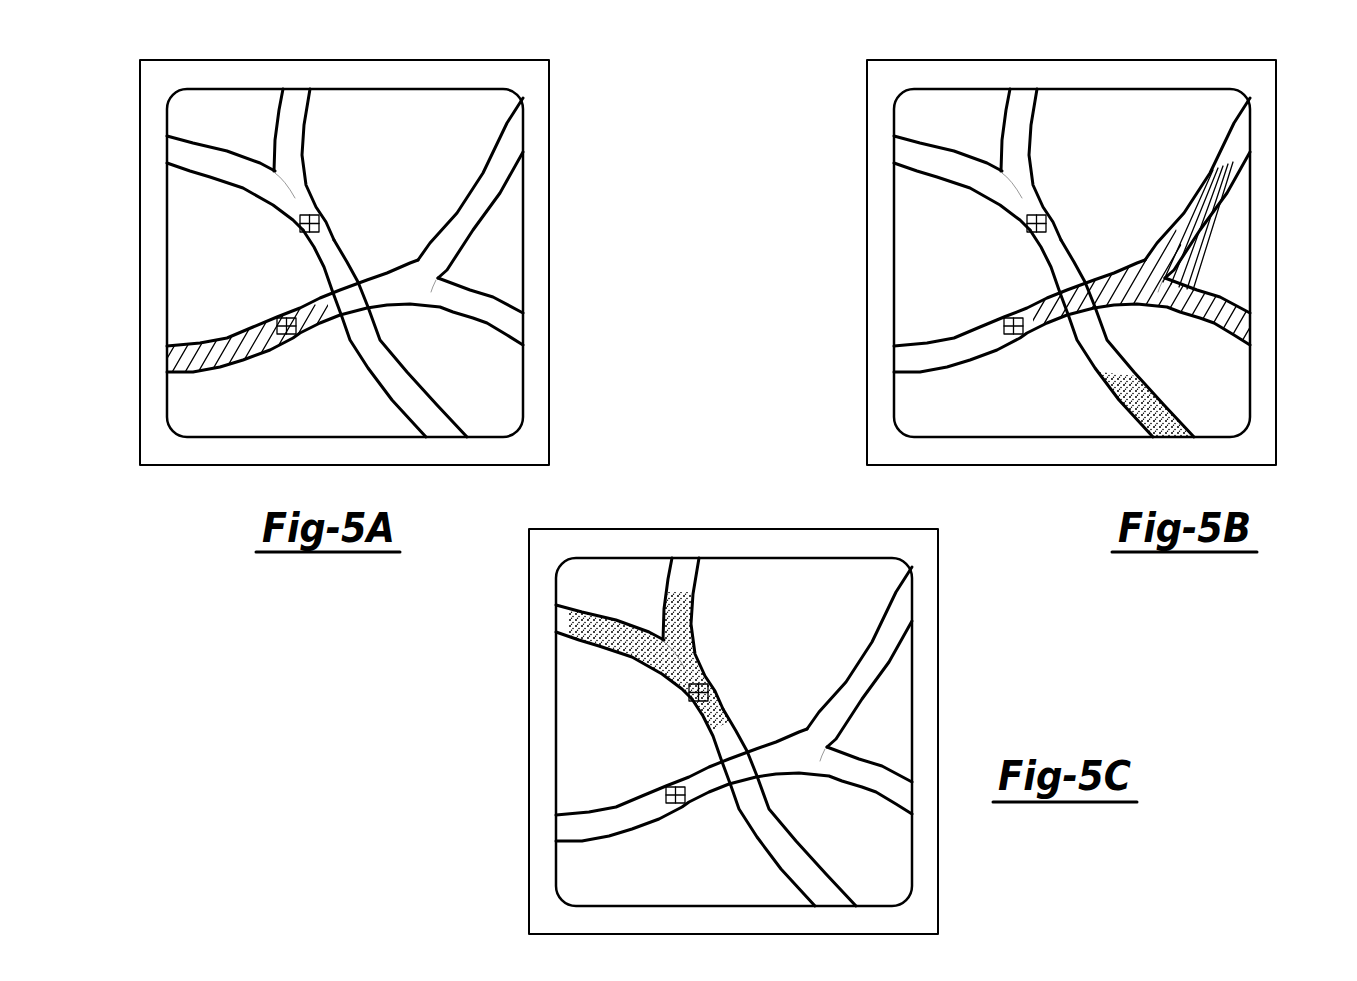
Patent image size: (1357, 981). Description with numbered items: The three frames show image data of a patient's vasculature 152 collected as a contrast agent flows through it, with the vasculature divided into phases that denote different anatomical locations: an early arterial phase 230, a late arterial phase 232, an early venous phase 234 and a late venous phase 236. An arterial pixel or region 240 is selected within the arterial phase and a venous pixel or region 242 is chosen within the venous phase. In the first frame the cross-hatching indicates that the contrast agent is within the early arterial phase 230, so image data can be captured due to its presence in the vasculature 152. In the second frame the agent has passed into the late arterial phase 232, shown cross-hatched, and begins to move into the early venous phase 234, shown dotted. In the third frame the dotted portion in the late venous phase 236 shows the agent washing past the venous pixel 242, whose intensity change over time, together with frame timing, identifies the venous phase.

In FIG. 5A, the vasculature 152 is at (231, 128).
In FIG. 5B, the vasculature 152 is at (1071, 241).
In FIG. 5C, the vasculature 152 is at (733, 710).
In FIG. 5A, the early arterial phase 230 is at (197, 348).
In FIG. 5B, the early arterial phase 230 is at (1084, 313).
In FIG. 5C, the early arterial phase 230 is at (697, 785).
In FIG. 5A, the late arterial phase 232 is at (493, 294).
In FIG. 5B, the late arterial phase 232 is at (1245, 196).
In FIG. 5C, the late arterial phase 232 is at (907, 665).
In FIG. 5A, the early venous phase 234 is at (439, 407).
In FIG. 5B, the early venous phase 234 is at (1114, 333).
In FIG. 5C, the early venous phase 234 is at (776, 802).
In FIG. 5A, the late venous phase 236 is at (287, 139).
In FIG. 5B, the late venous phase 236 is at (1069, 164).
In FIG. 5C, the late venous phase 236 is at (731, 633).
In FIG. 5A, the arterial pixel 240 is at (284, 335).
In FIG. 5B, the arterial pixel 240 is at (1018, 366).
In FIG. 5C, the arterial pixel 240 is at (680, 835).
In FIG. 5A, the venous pixel 242 is at (315, 212).
In FIG. 5B, the venous pixel 242 is at (1087, 197).
In FIG. 5C, the venous pixel 242 is at (749, 666).